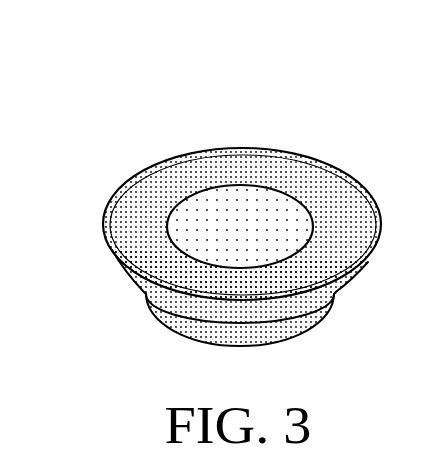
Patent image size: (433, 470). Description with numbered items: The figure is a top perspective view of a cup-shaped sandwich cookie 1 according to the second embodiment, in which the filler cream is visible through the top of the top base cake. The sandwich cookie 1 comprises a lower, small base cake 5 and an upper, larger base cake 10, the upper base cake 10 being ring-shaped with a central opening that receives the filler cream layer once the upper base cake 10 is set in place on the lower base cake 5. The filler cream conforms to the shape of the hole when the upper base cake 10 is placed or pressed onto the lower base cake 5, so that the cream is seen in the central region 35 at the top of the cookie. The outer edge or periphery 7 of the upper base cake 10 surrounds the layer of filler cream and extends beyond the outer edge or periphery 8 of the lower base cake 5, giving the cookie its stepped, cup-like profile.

The sandwich cookie 1 is at (219, 207).
The outer edge or periphery of the upper base cake 7 is at (120, 193).
The upper base cake 10 is at (338, 208).
The central area 35 is at (260, 213).
The outer edge or periphery of the lower base cake 8 is at (187, 337).
The lower base cake 5 is at (293, 325).